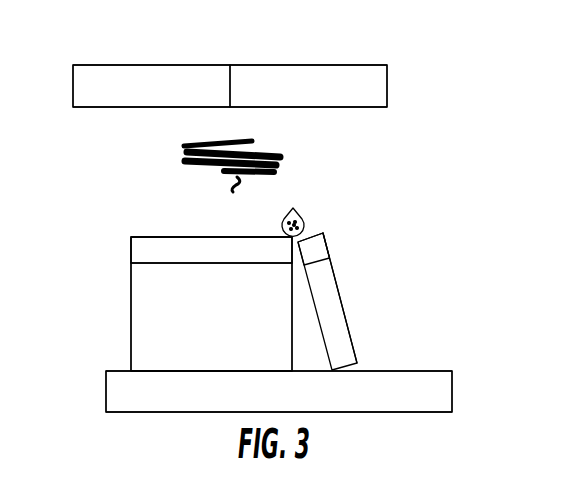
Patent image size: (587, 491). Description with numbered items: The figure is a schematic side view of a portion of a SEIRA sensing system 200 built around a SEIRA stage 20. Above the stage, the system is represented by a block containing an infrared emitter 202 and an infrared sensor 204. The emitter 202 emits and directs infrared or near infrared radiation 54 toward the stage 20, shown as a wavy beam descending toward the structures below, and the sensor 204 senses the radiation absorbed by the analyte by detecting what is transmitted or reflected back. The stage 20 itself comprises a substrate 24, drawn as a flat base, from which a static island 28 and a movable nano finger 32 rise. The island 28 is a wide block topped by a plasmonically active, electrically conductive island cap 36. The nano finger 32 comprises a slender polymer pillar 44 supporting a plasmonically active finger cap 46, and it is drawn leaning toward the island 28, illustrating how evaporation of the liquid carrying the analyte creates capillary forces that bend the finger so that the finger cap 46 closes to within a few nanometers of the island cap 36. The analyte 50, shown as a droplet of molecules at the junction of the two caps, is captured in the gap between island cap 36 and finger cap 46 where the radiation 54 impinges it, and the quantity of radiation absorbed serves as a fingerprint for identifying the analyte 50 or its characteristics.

The SEIRA sensing system 200 is at (374, 46).
The infrared emitter 202 is at (73, 88).
The infrared sensor 204 is at (387, 85).
The SEIRA stage 20 is at (109, 179).
The infrared radiation 54 is at (185, 142).
The analyte 50 is at (299, 217).
The island cap 36 is at (131, 257).
The island 28 is at (124, 310).
The substrate 24 is at (106, 393).
The nano finger 32 is at (354, 300).
The finger cap 46 is at (325, 243).
The pillar 44 is at (352, 330).